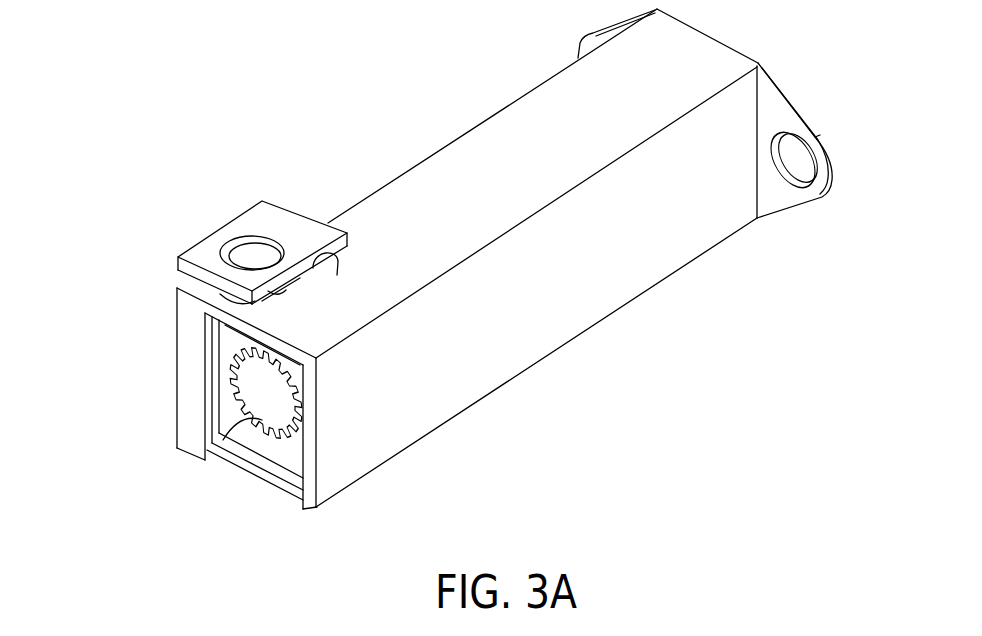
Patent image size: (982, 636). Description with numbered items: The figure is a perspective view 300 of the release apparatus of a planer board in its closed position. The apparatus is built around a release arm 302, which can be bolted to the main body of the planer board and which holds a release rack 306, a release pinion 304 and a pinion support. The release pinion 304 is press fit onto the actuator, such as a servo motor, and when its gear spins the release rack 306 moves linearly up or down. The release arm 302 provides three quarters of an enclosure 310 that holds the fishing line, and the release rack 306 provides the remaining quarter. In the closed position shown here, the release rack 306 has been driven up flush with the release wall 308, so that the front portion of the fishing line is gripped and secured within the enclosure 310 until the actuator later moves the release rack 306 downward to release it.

The perspective view 300 is at (132, 55).
The release arm 302 is at (478, 142).
The release pinion 304 is at (263, 389).
The release rack 306 is at (237, 261).
The release wall 308 is at (270, 218).
The enclosure 310 is at (312, 285).